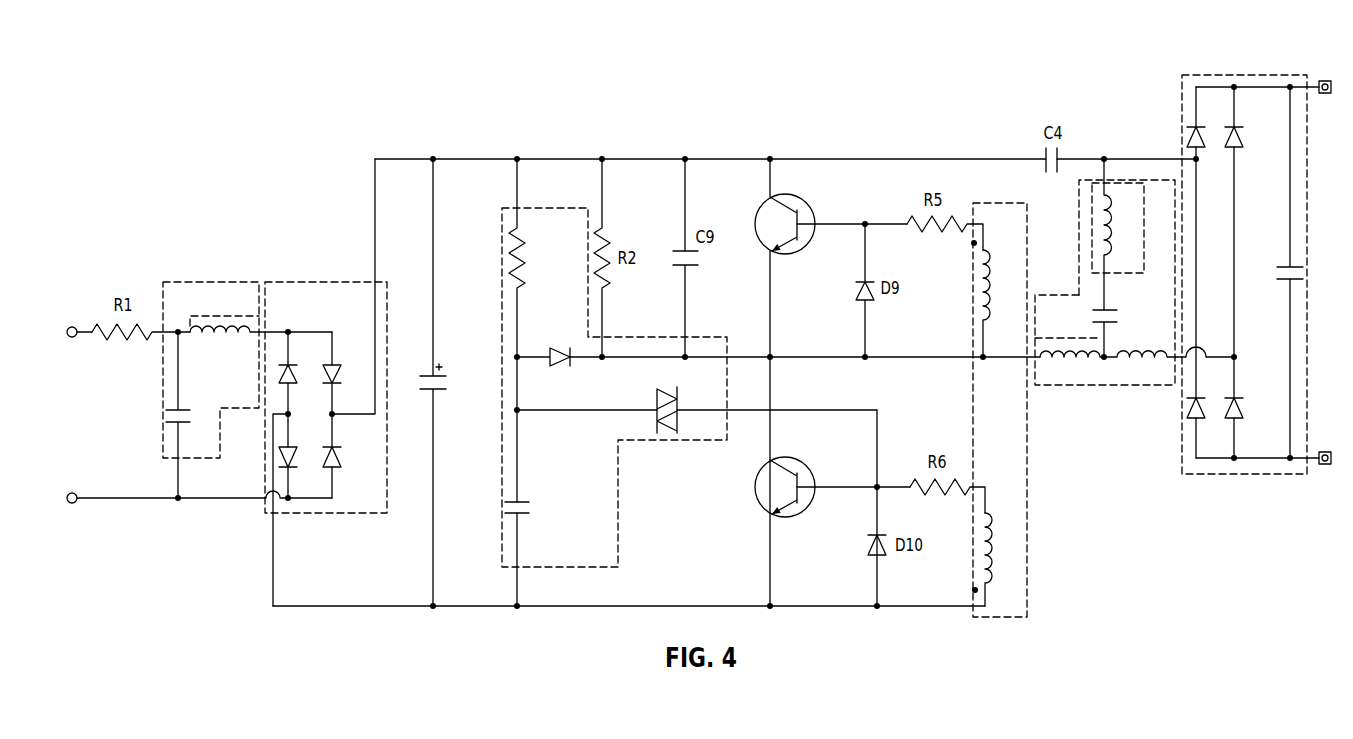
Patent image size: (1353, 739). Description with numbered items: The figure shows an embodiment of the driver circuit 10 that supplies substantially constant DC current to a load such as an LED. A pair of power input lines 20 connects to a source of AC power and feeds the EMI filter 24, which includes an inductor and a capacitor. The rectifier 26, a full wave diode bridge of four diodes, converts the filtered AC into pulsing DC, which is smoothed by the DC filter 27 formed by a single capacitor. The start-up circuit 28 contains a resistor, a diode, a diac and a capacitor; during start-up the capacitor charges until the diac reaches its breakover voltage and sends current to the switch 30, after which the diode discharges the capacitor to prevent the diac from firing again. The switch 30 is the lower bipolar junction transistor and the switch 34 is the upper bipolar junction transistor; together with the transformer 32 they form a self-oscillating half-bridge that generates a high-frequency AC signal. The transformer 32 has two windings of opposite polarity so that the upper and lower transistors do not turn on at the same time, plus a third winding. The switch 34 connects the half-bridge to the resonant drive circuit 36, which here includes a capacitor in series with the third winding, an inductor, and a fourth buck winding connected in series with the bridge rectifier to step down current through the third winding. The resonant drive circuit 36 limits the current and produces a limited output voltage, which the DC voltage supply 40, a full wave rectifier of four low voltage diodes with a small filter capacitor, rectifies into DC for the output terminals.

The driver circuit 10 is at (146, 132).
The power input lines 20 is at (74, 338).
The EMI filter 24 is at (193, 281).
The rectifier 26 is at (343, 281).
The DC filter 27 is at (446, 457).
The start-up circuit 28 is at (670, 441).
The switch 30 is at (803, 446).
The transformer 32 is at (1122, 181).
The switch 34 is at (786, 180).
The resonant drive circuit 36 is at (1110, 386).
The DC voltage supply 40 is at (1250, 475).